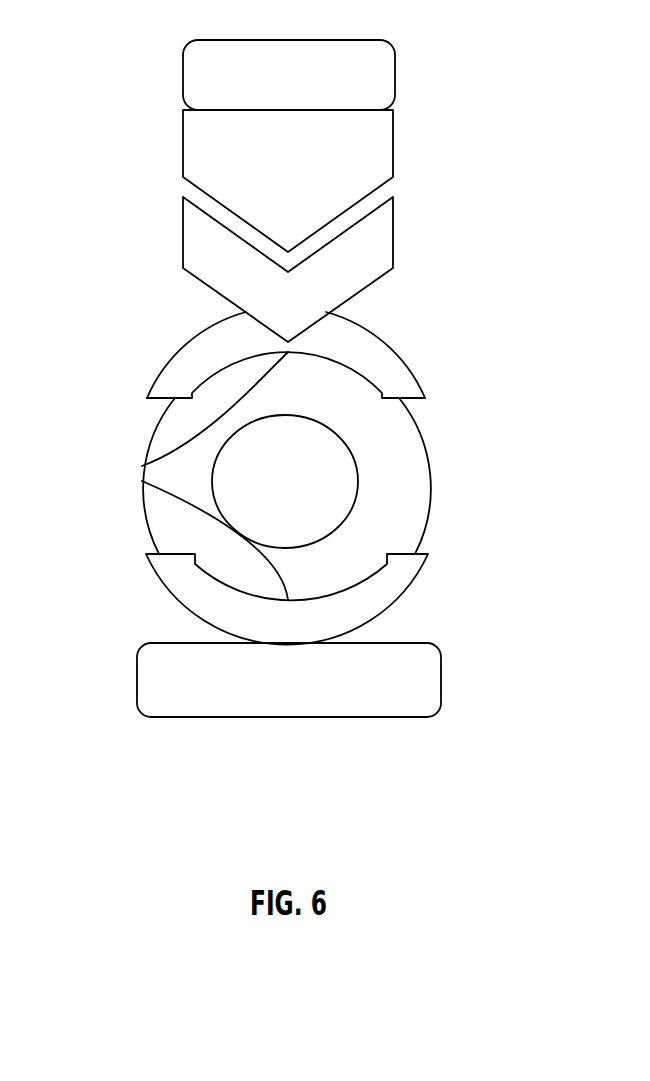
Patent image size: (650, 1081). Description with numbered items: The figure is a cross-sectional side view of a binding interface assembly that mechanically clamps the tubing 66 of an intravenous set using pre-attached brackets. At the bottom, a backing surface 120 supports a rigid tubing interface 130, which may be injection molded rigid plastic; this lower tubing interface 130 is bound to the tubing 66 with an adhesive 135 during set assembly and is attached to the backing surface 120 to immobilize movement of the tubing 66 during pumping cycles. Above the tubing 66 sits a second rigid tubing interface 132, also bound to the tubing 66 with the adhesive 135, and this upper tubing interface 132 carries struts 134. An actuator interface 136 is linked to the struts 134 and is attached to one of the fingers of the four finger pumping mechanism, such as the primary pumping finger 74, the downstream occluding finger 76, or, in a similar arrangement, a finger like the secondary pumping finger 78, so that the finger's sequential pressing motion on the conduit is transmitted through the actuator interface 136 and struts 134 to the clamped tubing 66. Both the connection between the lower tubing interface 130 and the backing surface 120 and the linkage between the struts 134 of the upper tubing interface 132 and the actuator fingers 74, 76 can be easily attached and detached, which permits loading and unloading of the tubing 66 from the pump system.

The secondary pumping finger 78 is at (310, 57).
The primary pumping finger 74 is at (310, 57).
The downstream occluding finger 76 is at (313, 40).
The actuator interface 136 is at (393, 147).
The struts 134 is at (393, 232).
The rigid tubing interface 132 is at (408, 342).
The tubing 66 is at (432, 483).
The adhesive 135 is at (142, 466).
The rigid tubing interface 130 is at (416, 602).
The backing surface 120 is at (441, 680).